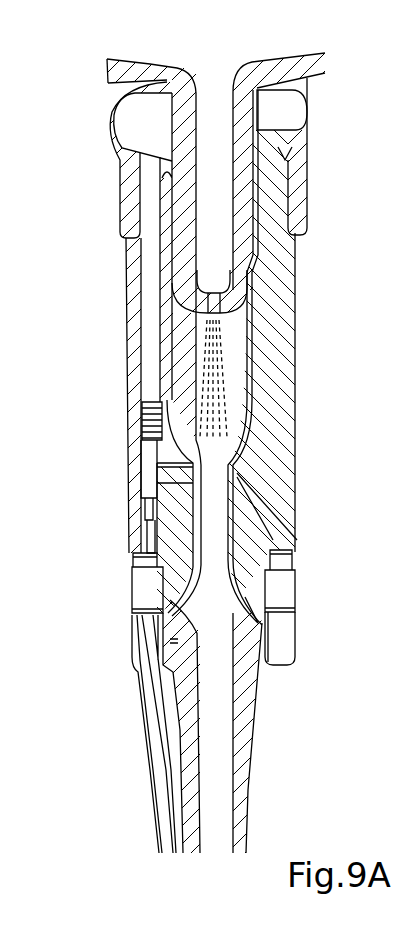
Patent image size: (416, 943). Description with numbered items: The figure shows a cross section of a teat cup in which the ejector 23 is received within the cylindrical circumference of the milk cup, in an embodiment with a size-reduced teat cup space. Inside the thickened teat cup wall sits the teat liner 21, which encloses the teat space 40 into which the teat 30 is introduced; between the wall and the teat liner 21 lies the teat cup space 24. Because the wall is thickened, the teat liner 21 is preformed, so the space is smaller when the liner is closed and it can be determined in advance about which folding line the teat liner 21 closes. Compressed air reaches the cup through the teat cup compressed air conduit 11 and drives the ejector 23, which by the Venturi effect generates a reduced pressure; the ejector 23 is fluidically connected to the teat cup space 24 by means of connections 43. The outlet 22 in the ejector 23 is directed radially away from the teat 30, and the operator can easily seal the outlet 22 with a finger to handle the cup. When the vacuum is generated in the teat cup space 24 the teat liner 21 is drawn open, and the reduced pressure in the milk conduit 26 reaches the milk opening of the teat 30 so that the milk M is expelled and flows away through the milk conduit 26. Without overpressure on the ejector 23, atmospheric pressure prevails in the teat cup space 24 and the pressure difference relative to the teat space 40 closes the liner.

The teat 30 is at (245, 130).
The teat liner 21 is at (415, 178).
The teat cup space 24 is at (415, 284).
The teat space 40 is at (240, 330).
The outlet 22 is at (415, 352).
The milk M is at (240, 397).
The ejector 23 is at (415, 450).
The connections 43 is at (415, 510).
The teat cup compressed air conduit 11 is at (414, 702).
The milk conduit 26 is at (248, 777).